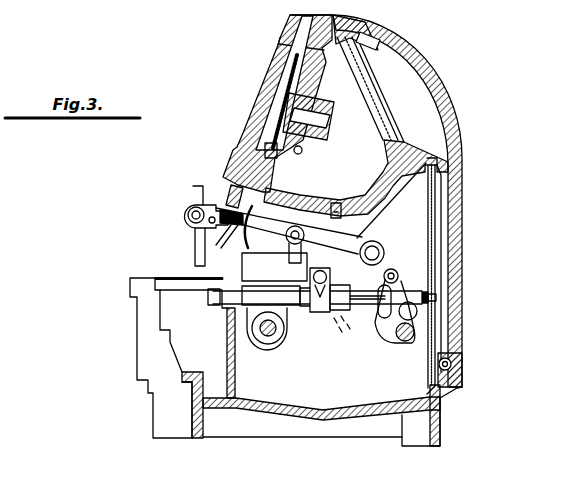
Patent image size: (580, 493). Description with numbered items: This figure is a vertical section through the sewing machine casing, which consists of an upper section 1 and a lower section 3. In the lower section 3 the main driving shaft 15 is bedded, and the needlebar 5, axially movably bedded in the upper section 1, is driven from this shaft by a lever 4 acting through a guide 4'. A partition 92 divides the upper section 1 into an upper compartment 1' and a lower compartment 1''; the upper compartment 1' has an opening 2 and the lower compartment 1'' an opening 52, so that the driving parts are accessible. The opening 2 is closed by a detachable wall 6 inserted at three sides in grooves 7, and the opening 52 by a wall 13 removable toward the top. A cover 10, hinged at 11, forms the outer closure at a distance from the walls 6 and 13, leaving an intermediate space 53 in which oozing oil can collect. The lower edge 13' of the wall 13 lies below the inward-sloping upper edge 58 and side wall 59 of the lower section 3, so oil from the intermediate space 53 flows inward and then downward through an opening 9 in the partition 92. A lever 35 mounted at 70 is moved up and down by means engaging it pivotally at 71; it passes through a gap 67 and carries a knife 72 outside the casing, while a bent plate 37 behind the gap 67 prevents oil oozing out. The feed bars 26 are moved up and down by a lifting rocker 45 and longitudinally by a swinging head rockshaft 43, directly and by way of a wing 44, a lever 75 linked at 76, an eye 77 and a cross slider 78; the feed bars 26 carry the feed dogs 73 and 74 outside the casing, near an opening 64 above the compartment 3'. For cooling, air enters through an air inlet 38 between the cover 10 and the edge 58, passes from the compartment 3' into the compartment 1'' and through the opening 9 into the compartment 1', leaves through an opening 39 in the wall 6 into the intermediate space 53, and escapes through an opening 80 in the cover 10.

The upper section of the casing 1 is at (347, 115).
The upper compartment 1' is at (282, 168).
The lower compartment 1'' is at (402, 232).
The opening 2 is at (380, 110).
The lower section of the casing 3 is at (463, 421).
The compartment of the lower section 3' is at (321, 437).
The lever 4 is at (245, 123).
The guide 4' is at (242, 83).
The needlebar 5 is at (296, 66).
The detachable wall 6 is at (370, 90).
The grooves 7 is at (292, 33).
The opening 9 is at (335, 204).
The cover 10 is at (458, 152).
The hinge 11 is at (460, 353).
The wall 13 is at (481, 274).
The lower edge of the wall 13' is at (408, 375).
The main driving shaft 15 is at (240, 330).
The feed bar 26 is at (305, 307).
The lever 35 is at (372, 234).
The bent plate 37 is at (188, 212).
The air inlet 38 is at (450, 366).
The opening 39 is at (352, 62).
The swinging head rockshaft 43 is at (413, 332).
The wing 44 is at (428, 296).
The lifting rocker 45 is at (252, 322).
The opening 52 is at (442, 213).
The intermediate space 53 is at (423, 118).
The upper edge of the lower section 58 is at (448, 370).
The side wall of the lower section 59 is at (452, 382).
The opening 64 is at (225, 308).
The gap 67 is at (236, 236).
The mounting of the lever 70 is at (385, 250).
The pivotal engagement 71 is at (295, 226).
The knife 72 is at (193, 190).
The feed dog 73 is at (193, 280).
The feed dog 74 is at (163, 280).
The lever 75 is at (357, 306).
The link 76 is at (398, 274).
The eye 77 is at (329, 312).
The cross slider 78 is at (320, 313).
The opening 80 is at (363, 40).
The partition 92 is at (373, 187).